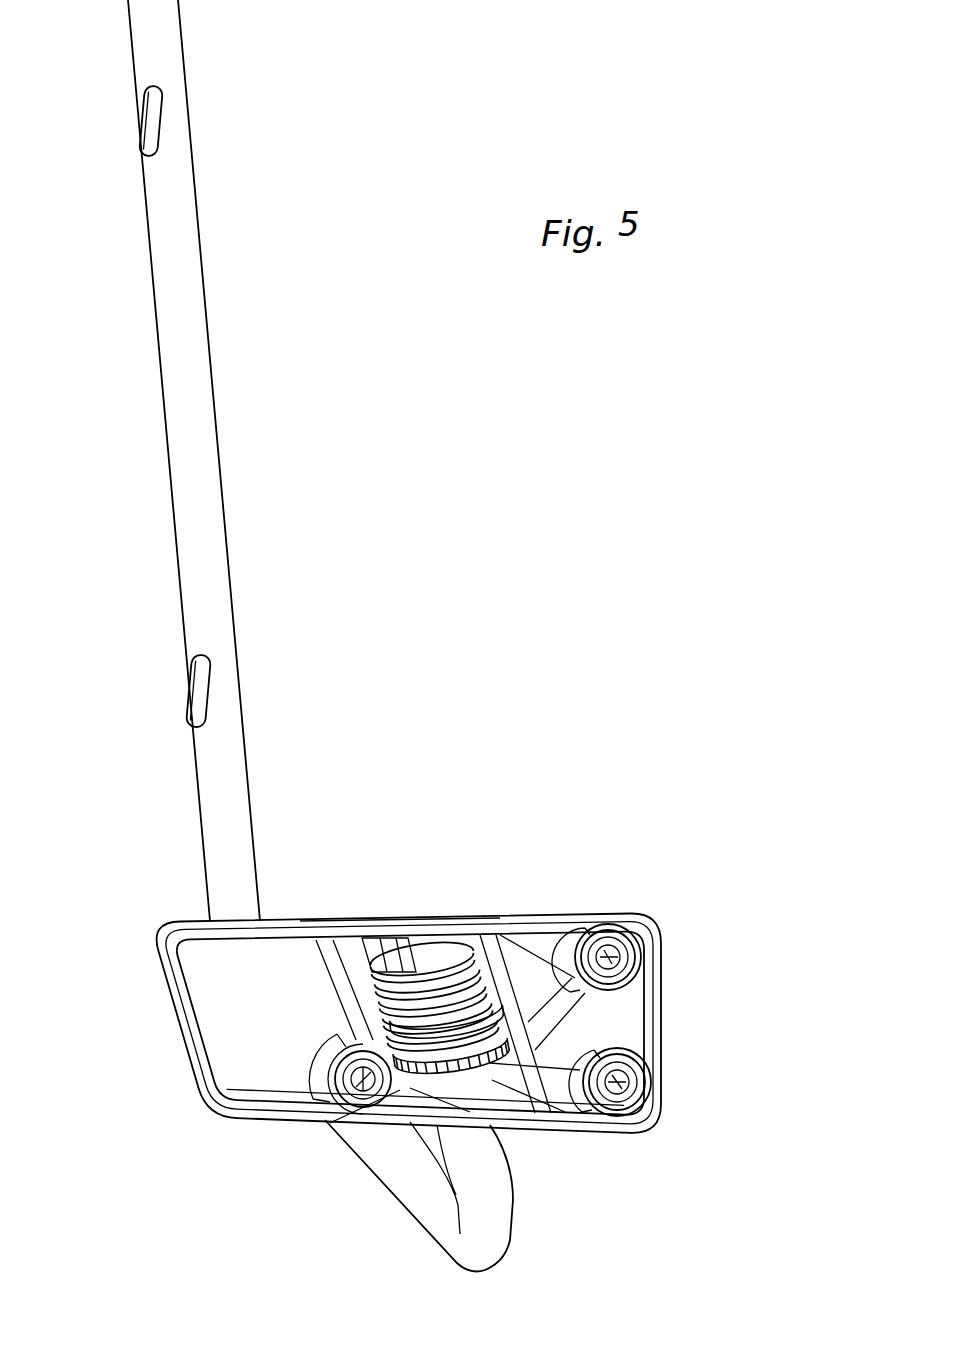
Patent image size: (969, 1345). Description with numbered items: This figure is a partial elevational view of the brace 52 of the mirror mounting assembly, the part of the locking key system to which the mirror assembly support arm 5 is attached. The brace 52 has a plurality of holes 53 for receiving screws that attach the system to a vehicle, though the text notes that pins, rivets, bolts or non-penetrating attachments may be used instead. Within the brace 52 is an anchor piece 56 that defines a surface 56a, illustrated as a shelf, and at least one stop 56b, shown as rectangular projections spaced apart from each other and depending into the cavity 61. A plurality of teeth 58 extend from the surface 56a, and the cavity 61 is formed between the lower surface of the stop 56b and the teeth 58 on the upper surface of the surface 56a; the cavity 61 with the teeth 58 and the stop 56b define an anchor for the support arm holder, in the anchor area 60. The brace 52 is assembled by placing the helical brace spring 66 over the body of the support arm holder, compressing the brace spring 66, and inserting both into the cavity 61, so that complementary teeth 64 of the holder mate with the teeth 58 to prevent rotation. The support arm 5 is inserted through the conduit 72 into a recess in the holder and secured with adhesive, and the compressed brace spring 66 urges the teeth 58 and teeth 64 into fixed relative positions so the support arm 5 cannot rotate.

The support arm 5 is at (165, 243).
The brace 52 is at (459, 1047).
The holes 53 is at (610, 955).
The anchor piece 56 is at (308, 1006).
The surface 56a is at (552, 1036).
The stop 56b is at (398, 1090).
The teeth 58 is at (397, 1088).
The anchor area 60 is at (388, 918).
The cavity 61 is at (367, 985).
The teeth 64 is at (425, 1082).
The brace spring 66 is at (470, 948).
The conduit 72 is at (517, 1125).